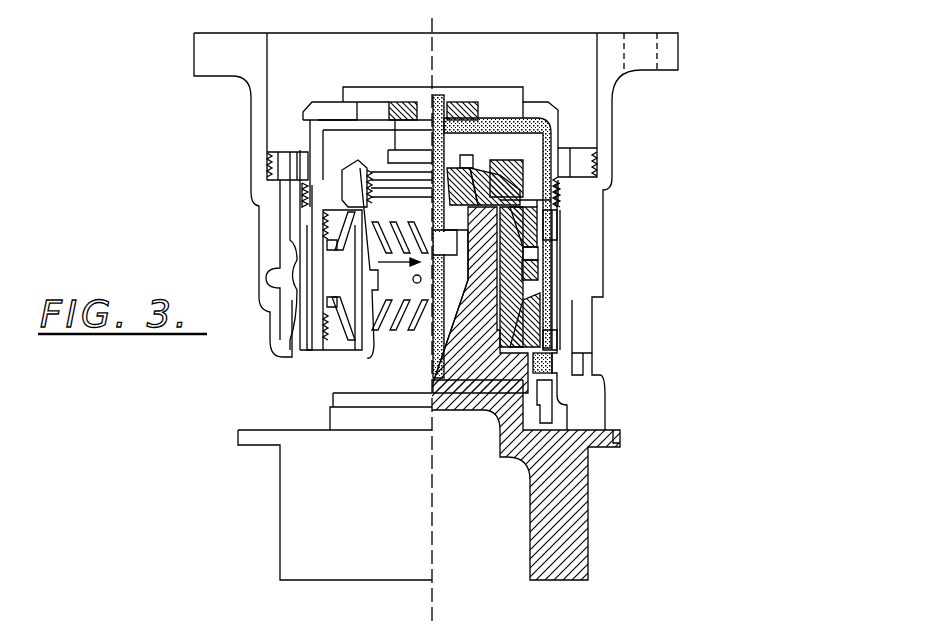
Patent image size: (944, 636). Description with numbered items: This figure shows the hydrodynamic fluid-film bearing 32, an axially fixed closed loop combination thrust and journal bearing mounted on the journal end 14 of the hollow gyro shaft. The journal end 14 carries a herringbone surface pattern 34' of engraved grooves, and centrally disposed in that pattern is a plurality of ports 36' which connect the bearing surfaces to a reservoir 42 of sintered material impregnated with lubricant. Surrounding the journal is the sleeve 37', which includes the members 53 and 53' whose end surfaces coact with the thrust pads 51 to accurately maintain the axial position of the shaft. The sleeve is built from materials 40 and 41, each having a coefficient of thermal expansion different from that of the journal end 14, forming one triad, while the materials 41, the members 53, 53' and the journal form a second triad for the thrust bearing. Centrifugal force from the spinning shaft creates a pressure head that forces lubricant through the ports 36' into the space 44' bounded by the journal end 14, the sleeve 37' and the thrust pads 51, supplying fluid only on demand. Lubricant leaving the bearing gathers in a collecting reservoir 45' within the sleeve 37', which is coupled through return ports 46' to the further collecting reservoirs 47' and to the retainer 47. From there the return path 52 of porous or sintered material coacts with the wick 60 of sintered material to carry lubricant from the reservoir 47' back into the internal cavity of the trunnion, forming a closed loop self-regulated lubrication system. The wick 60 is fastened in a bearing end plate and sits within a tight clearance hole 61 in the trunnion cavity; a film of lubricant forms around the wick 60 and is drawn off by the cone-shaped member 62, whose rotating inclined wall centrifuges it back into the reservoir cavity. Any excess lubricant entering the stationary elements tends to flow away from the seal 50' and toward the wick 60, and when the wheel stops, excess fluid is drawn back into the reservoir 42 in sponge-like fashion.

The hydrodynamic fluid-film bearing 32 is at (170, 78).
The wick 60 is at (443, 97).
The return path 52 is at (497, 118).
The collecting reservoir 47' is at (542, 143).
The clearance hole 61 is at (418, 148).
The cone-shaped member 62 is at (452, 160).
The space 44' is at (487, 176).
The herringbone surface pattern 34' is at (379, 270).
The thrust pads 51 is at (545, 197).
The member 53 is at (573, 222).
The return ports 46' is at (598, 280).
The collecting reservoir 45' is at (614, 280).
The sleeve 37' is at (580, 258).
The material 41 is at (533, 280).
The material 40 is at (513, 295).
The member 53' is at (567, 320).
The retainer 47 is at (588, 317).
The seal 50' is at (570, 401).
The ports 36' is at (405, 331).
The journal end 14 is at (402, 299).
The stem sleeve 42 is at (458, 253).